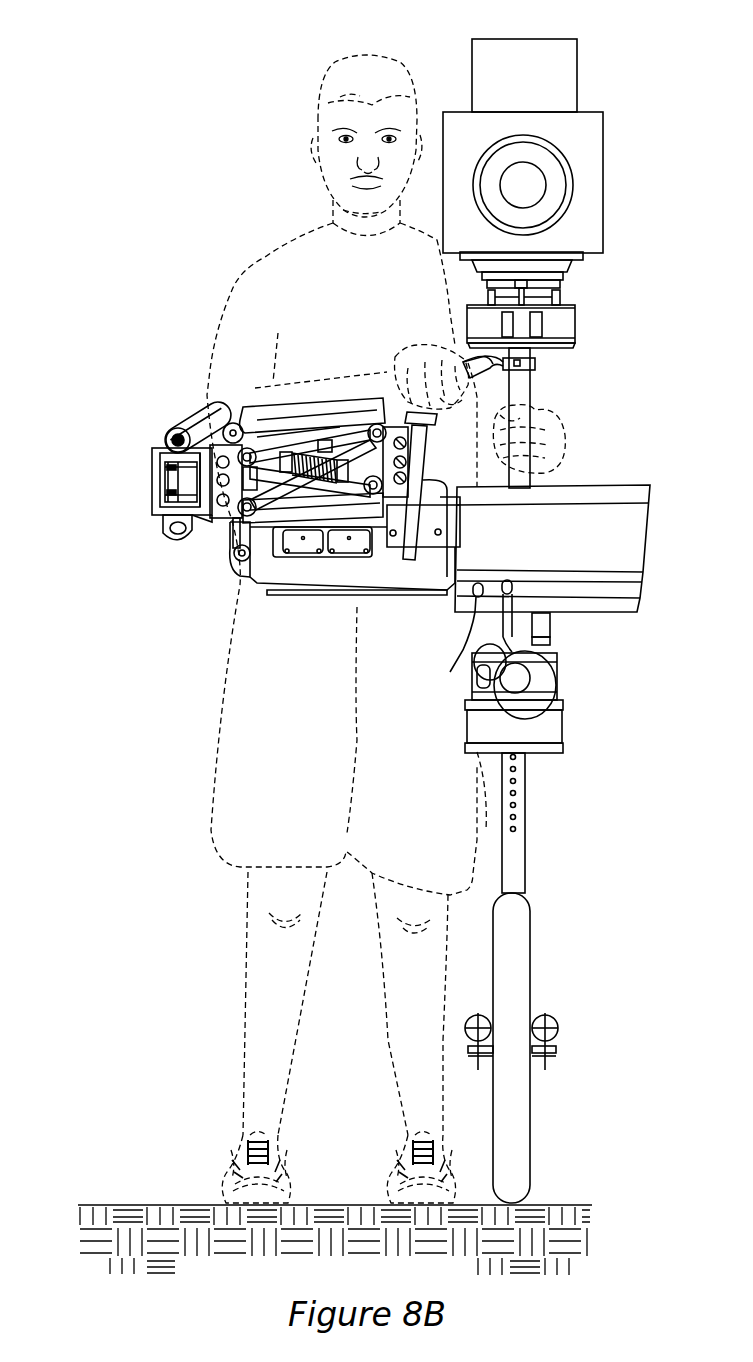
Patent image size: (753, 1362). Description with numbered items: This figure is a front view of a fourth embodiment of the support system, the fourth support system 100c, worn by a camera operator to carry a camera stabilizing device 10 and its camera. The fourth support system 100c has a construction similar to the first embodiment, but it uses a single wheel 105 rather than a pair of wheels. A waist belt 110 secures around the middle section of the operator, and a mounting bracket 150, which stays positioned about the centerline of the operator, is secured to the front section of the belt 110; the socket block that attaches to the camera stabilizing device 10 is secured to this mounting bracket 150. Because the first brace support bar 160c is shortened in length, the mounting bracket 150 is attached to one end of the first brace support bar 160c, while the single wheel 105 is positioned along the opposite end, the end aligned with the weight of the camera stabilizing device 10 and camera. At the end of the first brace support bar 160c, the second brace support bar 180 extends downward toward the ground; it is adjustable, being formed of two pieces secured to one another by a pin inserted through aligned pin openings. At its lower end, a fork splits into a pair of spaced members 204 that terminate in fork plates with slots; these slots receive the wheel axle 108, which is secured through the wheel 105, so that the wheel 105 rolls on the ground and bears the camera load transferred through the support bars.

The camera stabilizing device 10 is at (580, 309).
The fourth support system 100c is at (220, 567).
The mounting bracket 150 is at (297, 550).
The waist belt 110 is at (325, 582).
The first brace support bar 160c is at (390, 540).
The second brace support bar 180 is at (520, 863).
The wheel 105 is at (523, 960).
The spaced members 204 is at (558, 1020).
The wheel axle 108 is at (552, 1052).